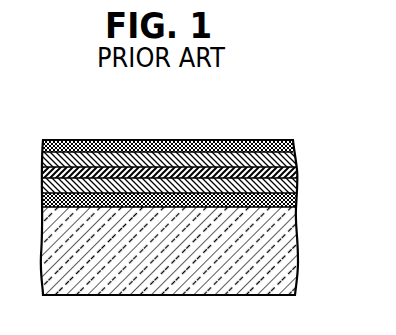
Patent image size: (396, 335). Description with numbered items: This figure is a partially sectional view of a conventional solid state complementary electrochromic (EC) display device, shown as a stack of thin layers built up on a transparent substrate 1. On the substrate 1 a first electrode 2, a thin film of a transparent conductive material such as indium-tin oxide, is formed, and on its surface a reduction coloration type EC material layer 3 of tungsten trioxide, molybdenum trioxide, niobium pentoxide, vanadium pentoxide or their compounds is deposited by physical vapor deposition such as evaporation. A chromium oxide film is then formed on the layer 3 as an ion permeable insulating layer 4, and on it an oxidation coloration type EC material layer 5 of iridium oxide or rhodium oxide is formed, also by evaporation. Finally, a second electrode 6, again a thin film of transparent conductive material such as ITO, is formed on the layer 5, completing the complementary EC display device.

The transparent substrate 1 is at (281, 253).
The first electrode 2 is at (296, 204).
The reduction coloration type EC material layer 3 is at (297, 190).
The ion permeable insulating layer 4 is at (297, 171).
The oxidation coloration type EC material layer 5 is at (297, 156).
The second electrode 6 is at (293, 140).